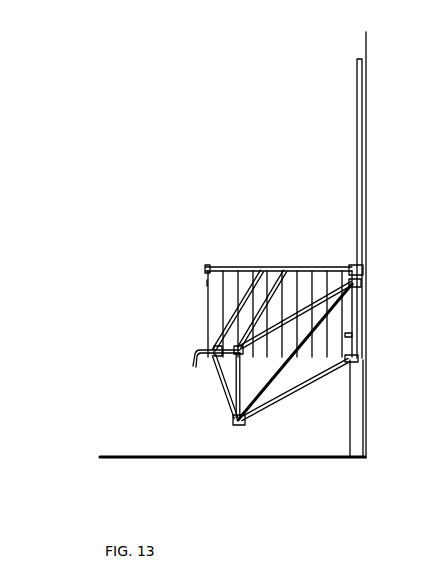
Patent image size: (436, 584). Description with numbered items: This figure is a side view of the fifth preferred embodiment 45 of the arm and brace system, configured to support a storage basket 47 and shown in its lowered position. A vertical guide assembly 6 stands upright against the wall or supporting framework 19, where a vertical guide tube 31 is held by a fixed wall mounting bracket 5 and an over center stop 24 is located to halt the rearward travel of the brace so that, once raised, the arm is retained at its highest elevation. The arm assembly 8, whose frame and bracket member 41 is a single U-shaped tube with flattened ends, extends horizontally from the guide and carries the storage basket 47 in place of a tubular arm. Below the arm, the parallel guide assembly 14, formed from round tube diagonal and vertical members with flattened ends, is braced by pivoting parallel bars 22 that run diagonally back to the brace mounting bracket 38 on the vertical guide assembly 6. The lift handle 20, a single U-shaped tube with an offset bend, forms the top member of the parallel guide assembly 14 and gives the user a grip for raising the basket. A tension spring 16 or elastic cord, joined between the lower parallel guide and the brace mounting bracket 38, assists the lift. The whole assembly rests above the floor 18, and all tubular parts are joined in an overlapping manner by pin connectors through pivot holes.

The fifth preferred embodiment 45 is at (92, 130).
The fixed wall mounting bracket 5 is at (364, 60).
The vertical guide tube 31 is at (357, 145).
The vertical guide assembly 6 is at (366, 150).
The wall or supporting framework 19 is at (366, 203).
The frame and bracket member 41 is at (231, 267).
The arm assembly 8 is at (203, 266).
The storage basket 47 is at (206, 283).
The pivoting parallel bars 22 is at (240, 345).
The brace mounting bracket 38 is at (362, 287).
The over center stop 24 is at (354, 336).
The lift handle 20 is at (190, 367).
The parallel guide assembly 14 is at (222, 402).
The tension spring 16 is at (280, 374).
The floor 18 is at (294, 460).